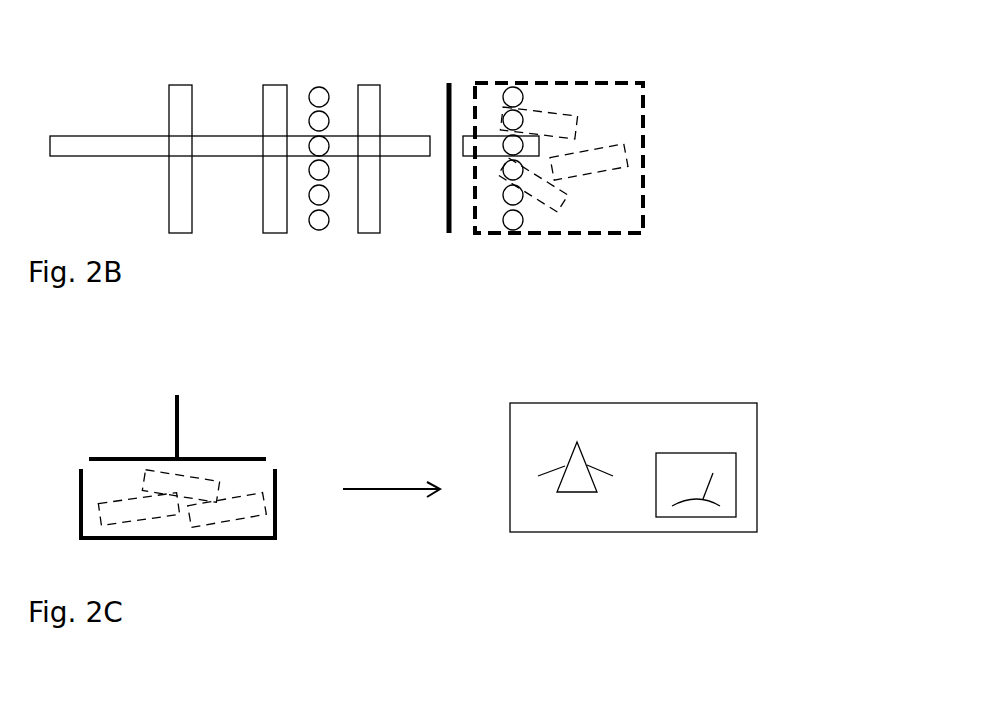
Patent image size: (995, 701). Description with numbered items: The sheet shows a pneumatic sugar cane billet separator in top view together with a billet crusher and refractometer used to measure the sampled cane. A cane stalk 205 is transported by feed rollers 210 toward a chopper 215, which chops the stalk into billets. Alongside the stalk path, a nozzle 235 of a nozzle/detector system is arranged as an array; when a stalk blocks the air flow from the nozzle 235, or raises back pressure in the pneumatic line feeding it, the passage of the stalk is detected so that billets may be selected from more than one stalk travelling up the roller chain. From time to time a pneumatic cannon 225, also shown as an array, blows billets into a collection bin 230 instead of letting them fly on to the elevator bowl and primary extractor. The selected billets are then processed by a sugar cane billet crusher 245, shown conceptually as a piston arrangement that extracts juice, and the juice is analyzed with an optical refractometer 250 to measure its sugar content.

In FIG. 2B, the cane stalk 205 is at (100, 133).
In FIG. 2B, the feed rollers 210 is at (262, 78).
In FIG. 2B, the nozzle 235 is at (319, 82).
In FIG. 2B, the chopper 215 is at (453, 80).
In FIG. 2B, the pneumatic cannon 225 is at (512, 92).
In FIG. 2B, the collection bin 230 is at (647, 92).
In FIG. 2C, the sugar cane billet crusher 245 is at (222, 418).
In FIG. 2C, the optical refractometer 250 is at (705, 402).